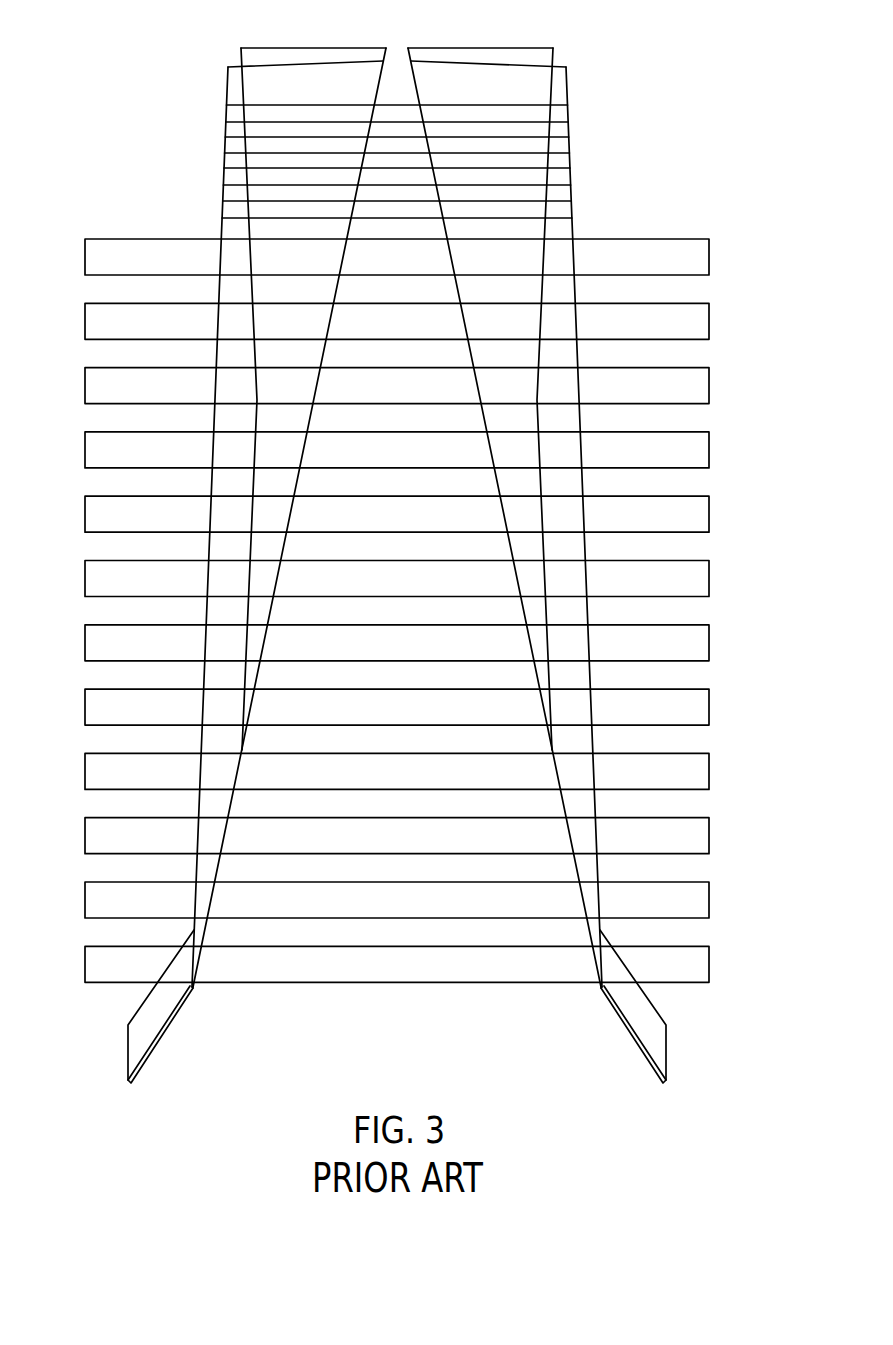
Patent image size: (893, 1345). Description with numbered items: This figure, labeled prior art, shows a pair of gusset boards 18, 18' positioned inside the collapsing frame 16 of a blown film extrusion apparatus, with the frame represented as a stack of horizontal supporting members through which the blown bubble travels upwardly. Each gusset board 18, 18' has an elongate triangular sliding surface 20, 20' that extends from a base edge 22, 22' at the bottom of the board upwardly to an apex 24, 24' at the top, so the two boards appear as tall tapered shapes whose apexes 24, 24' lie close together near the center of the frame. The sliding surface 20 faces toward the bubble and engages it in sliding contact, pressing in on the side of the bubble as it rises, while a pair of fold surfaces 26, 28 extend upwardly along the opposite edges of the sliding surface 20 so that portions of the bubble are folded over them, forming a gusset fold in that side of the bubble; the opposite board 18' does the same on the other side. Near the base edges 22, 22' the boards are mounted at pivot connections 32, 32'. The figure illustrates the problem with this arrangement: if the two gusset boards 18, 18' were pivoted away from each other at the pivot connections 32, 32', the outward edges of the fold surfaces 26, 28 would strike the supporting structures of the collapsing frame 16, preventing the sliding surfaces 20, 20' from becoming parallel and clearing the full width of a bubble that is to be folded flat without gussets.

The collapsing frame 16 is at (714, 384).
The gusset board 18 is at (576, 545).
The gusset board 18' is at (216, 545).
The sliding surface 20 is at (620, 399).
The sliding surface 20' is at (172, 399).
The base edge 22 is at (674, 1006).
The base edge 22' is at (118, 1006).
The apex 24 is at (478, 28).
The apex 24' is at (316, 28).
The fold surface 26 is at (511, 351).
The fold surface 28 is at (283, 351).
The pivot connection 32 is at (571, 1013).
The pivot connection 32' is at (226, 1014).